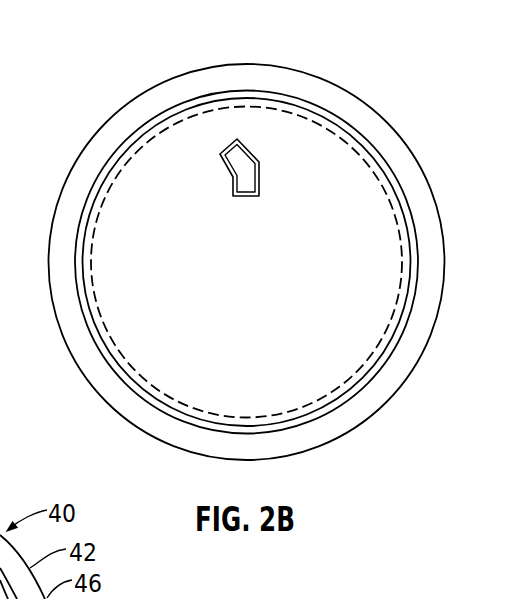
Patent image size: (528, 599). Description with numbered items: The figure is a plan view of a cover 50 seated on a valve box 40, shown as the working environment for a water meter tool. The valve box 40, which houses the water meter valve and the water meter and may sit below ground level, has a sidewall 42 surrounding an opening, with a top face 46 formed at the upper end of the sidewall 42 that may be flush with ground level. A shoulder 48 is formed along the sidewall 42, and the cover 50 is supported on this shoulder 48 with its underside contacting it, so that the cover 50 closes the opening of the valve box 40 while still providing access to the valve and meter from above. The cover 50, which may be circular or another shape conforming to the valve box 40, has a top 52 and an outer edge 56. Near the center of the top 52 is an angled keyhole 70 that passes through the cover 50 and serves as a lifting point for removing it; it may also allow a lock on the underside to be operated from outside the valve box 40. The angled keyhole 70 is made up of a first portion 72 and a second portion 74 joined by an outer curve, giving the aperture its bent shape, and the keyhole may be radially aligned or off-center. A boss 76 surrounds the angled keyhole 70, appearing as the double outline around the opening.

The valve box 40 is at (395, 96).
The sidewall 42 is at (417, 160).
The top face 46 is at (412, 197).
The shoulder 48 is at (399, 240).
The cover 50 is at (233, 344).
The top 52 is at (145, 182).
The outer edge 56 is at (83, 209).
The angled keyhole 70 is at (246, 209).
The first portion 72 is at (244, 181).
The second portion 74 is at (237, 157).
The boss 76 is at (233, 180).